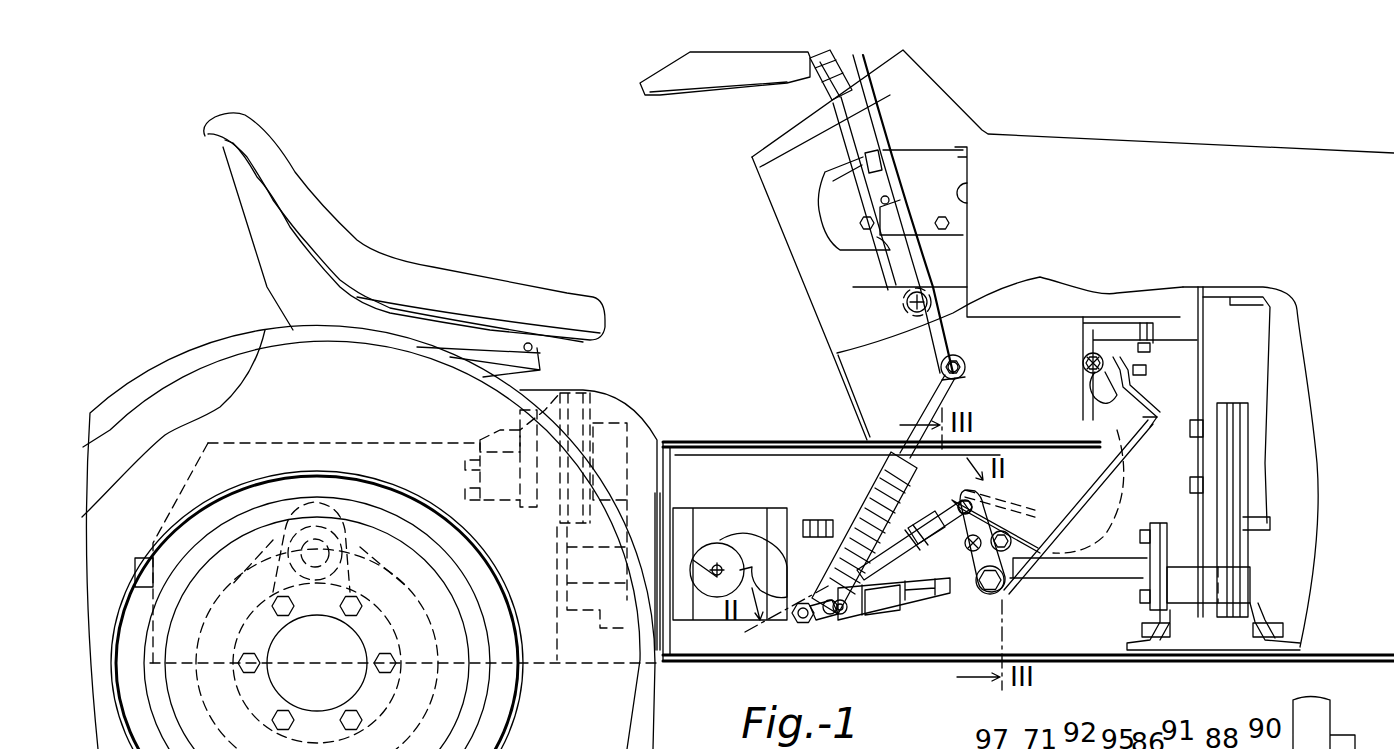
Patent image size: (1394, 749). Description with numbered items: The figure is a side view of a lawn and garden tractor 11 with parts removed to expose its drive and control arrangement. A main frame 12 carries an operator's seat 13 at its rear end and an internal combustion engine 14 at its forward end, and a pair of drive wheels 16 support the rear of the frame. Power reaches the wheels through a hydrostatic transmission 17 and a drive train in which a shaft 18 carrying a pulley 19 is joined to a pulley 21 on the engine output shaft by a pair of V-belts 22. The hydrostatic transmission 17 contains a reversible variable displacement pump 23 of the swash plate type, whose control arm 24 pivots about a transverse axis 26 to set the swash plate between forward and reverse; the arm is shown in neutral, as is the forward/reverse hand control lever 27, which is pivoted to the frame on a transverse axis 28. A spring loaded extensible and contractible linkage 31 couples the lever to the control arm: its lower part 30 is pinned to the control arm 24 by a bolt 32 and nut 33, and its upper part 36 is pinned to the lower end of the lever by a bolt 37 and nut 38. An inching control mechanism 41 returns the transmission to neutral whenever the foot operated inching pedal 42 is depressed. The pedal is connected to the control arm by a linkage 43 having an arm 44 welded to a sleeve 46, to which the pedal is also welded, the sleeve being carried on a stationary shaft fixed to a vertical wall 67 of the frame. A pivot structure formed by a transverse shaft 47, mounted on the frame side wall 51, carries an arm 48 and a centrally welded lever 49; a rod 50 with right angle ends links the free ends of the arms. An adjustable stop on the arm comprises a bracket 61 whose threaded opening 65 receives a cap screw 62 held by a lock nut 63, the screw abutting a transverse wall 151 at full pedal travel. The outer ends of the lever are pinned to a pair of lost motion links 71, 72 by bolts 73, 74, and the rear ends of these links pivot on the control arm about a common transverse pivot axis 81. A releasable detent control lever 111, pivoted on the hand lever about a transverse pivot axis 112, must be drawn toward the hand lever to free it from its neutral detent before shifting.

The lawn and garden tractor 11 is at (732, 437).
The main frame 12 is at (825, 437).
The operator's seat 13 is at (458, 272).
The internal combustion engine 14 is at (1295, 336).
The drive wheels 16 is at (265, 363).
The hydrostatic transmission 17 is at (668, 497).
The shaft 18 is at (1075, 575).
The pulley 19 is at (1260, 527).
The pulley 21 is at (1250, 427).
The V-belts 22 is at (1233, 378).
The reversible variable displacement pump 23 is at (745, 505).
The control arm 24 is at (763, 560).
The transverse axis 26 is at (715, 560).
The forward/reverse hand control lever 27 is at (858, 145).
The transverse axis 28 is at (905, 310).
The lower part 30 is at (805, 525).
The spring loaded extensible and contractible linkage 31 is at (905, 412).
The bolt 32 is at (798, 618).
The nut 33 is at (820, 620).
The upper part 36 is at (962, 395).
The bolt 37 is at (962, 362).
The nut 38 is at (968, 370).
The inching control mechanism 41 is at (920, 612).
The inching pedal 42 is at (1008, 496).
The linkage 43 is at (1080, 485).
The arm 44 is at (1148, 430).
The sleeve 46 is at (1083, 352).
The transverse shaft 47 is at (990, 528).
The arm 48 is at (1005, 597).
The lever 49 is at (1003, 541).
The rod 50 is at (1130, 492).
The side wall 51 is at (800, 455).
The bracket 61 is at (1133, 380).
The cap screw 62 is at (1147, 372).
The lock nut 63 is at (1107, 343).
The threaded opening 65 is at (1151, 350).
The vertical wall 67 is at (1085, 335).
The lost motion link 71 is at (905, 535).
The lost motion link 72 is at (890, 620).
The bolt 73 is at (950, 506).
The bolt 74 is at (990, 600).
The common transverse pivot axis 81 is at (848, 612).
The releasable detent control lever 111 is at (850, 86).
The transverse pivot axis 112 is at (890, 198).
The transverse wall 151 is at (1145, 320).